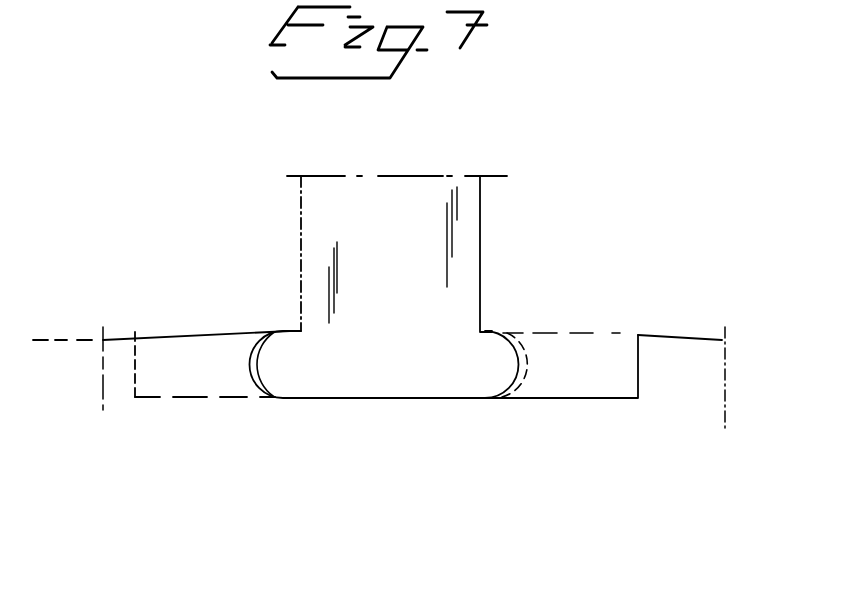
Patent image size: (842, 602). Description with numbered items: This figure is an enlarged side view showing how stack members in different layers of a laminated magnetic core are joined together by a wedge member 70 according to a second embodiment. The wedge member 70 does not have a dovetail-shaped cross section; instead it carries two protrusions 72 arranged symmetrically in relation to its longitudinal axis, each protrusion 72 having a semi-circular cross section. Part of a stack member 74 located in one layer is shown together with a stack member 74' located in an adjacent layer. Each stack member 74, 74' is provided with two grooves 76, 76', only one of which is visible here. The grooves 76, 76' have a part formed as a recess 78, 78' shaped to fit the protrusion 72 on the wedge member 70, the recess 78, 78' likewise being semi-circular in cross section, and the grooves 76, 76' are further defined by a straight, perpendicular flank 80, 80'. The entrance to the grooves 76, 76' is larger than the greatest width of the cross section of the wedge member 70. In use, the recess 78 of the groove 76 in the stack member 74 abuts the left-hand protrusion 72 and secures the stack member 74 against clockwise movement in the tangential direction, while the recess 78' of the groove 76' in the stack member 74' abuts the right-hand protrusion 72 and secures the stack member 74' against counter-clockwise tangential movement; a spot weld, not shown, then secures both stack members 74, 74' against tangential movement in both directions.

The wedge member 70 is at (312, 221).
The protrusion 72 is at (495, 332).
The stack member 74 is at (681, 354).
The stack member 74' is at (161, 345).
The groove 76 is at (561, 402).
The groove 76' is at (205, 400).
The recess 78 is at (229, 338).
The recess 78' is at (561, 337).
The flank 80 is at (622, 318).
The flank 80' is at (111, 322).